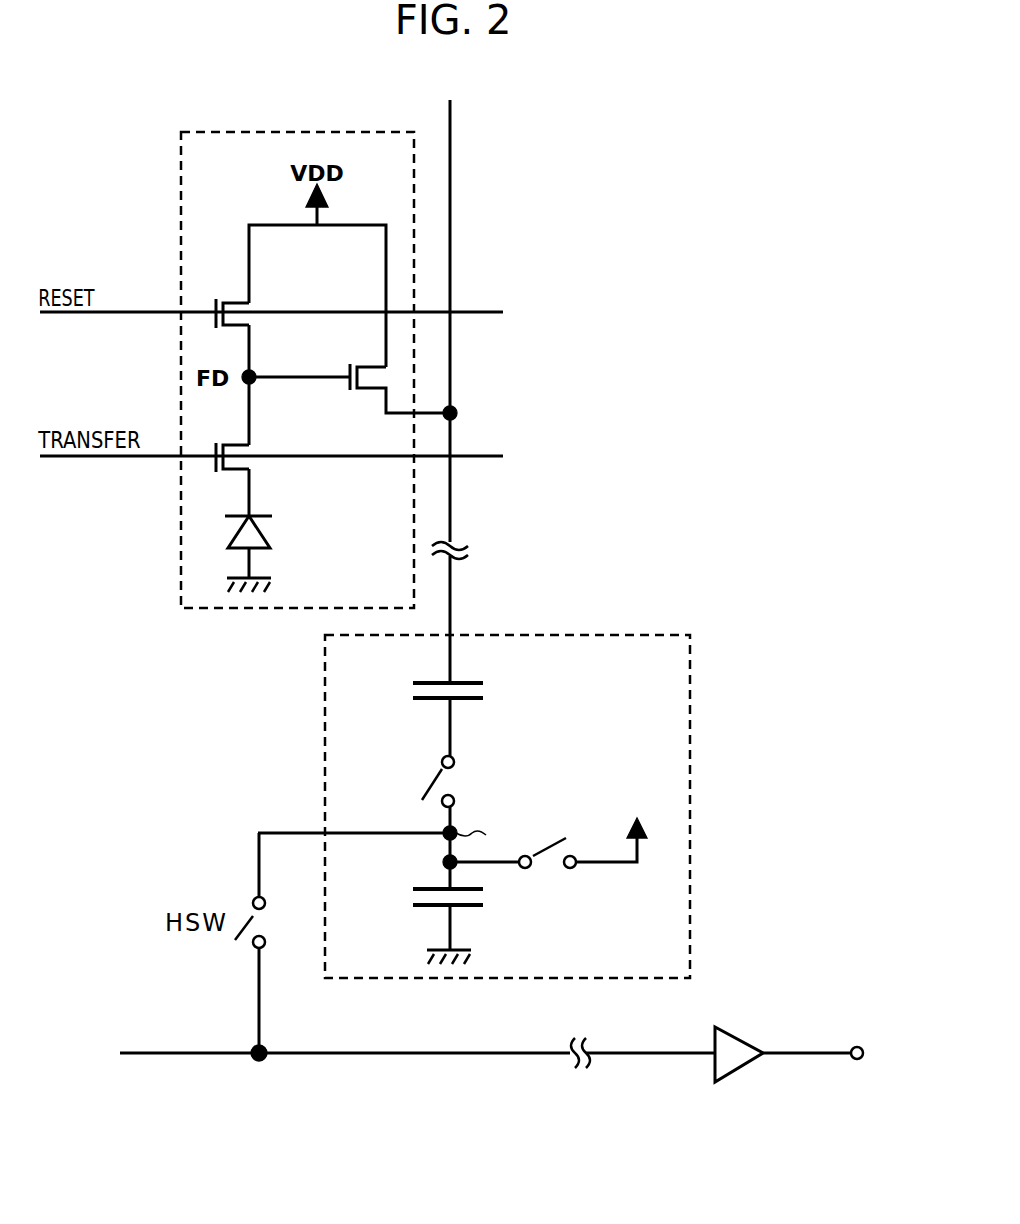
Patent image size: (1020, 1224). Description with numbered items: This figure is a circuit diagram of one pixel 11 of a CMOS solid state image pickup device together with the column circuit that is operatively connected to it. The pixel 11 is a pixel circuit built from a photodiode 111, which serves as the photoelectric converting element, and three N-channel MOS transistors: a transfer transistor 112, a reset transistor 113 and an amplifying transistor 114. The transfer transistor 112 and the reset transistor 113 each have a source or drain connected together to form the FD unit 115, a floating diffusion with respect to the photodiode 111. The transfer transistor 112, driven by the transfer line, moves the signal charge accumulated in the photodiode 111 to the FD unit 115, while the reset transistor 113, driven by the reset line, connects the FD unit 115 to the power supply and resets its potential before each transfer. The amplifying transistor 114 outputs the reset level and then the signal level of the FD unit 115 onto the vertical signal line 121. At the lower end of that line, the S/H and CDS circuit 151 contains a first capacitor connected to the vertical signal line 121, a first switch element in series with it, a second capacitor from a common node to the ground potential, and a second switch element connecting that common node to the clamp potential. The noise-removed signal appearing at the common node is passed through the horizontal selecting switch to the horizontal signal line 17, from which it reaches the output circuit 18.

The pixel 11 is at (272, 136).
The photodiode 111 is at (258, 522).
The transfer transistor 112 is at (244, 462).
The reset transistor 113 is at (244, 318).
The amplifying transistor 114 is at (364, 392).
The FD unit 115 is at (254, 383).
The vertical signal line 121 is at (453, 355).
The S/H and CDS circuit 151 is at (572, 634).
The horizontal signal line 17 is at (360, 1056).
The output circuit 18 is at (738, 1036).